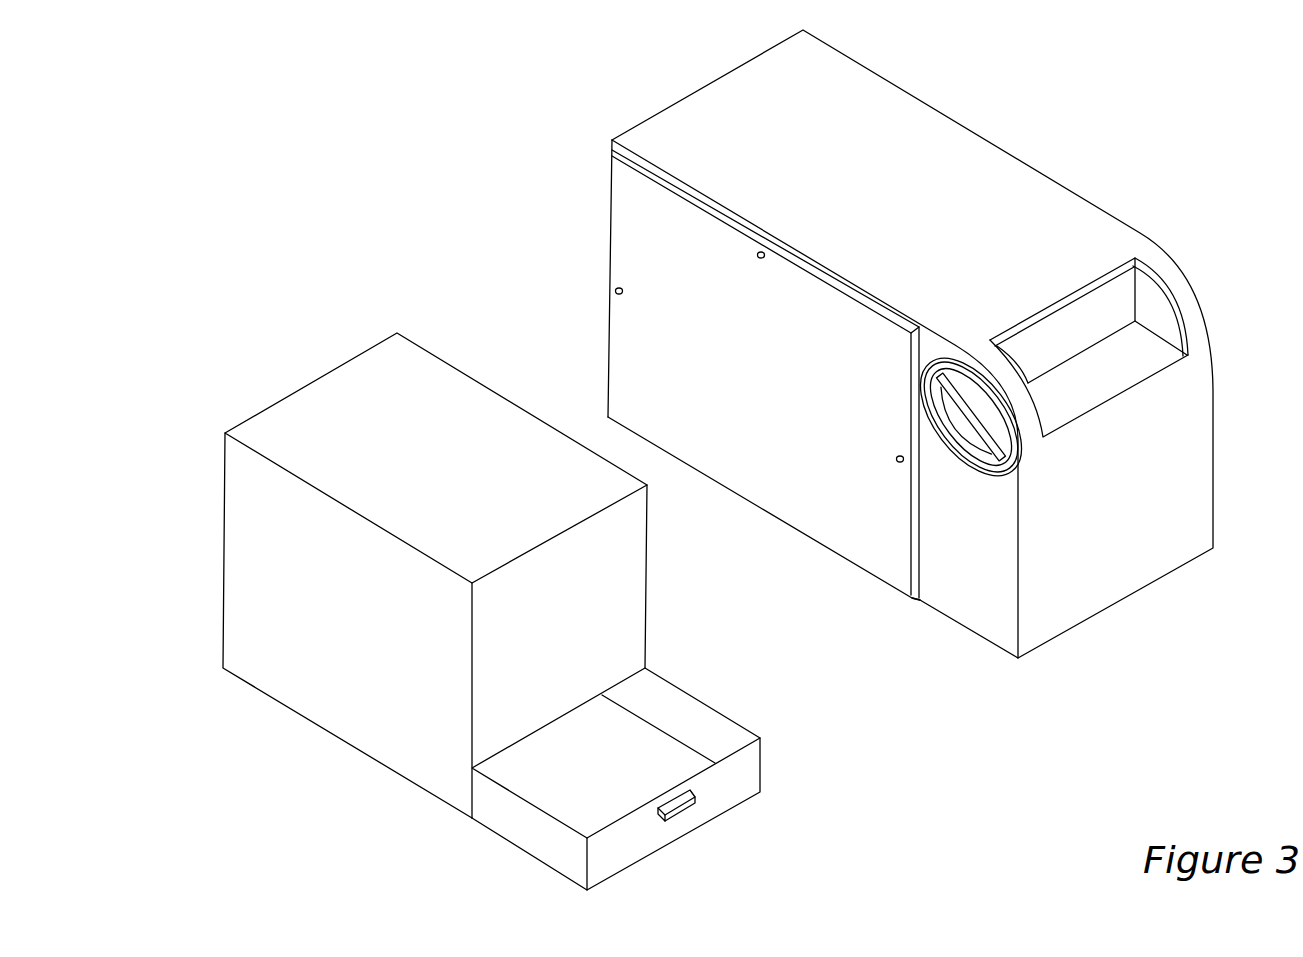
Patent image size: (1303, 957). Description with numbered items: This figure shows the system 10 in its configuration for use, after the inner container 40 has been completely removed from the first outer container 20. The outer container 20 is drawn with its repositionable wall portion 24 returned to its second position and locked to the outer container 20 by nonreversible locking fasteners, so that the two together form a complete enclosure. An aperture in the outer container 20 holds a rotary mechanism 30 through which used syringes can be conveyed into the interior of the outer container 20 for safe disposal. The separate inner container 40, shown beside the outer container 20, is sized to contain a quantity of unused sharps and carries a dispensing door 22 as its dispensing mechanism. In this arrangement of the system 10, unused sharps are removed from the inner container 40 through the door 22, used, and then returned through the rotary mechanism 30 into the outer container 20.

The system 10 is at (1207, 148).
The first outer container 20 is at (955, 142).
The dispensing door 22 is at (723, 792).
The repositionable wall portion 24 is at (818, 524).
The rotary mechanism 30 is at (1150, 307).
The inner container 40 is at (238, 521).